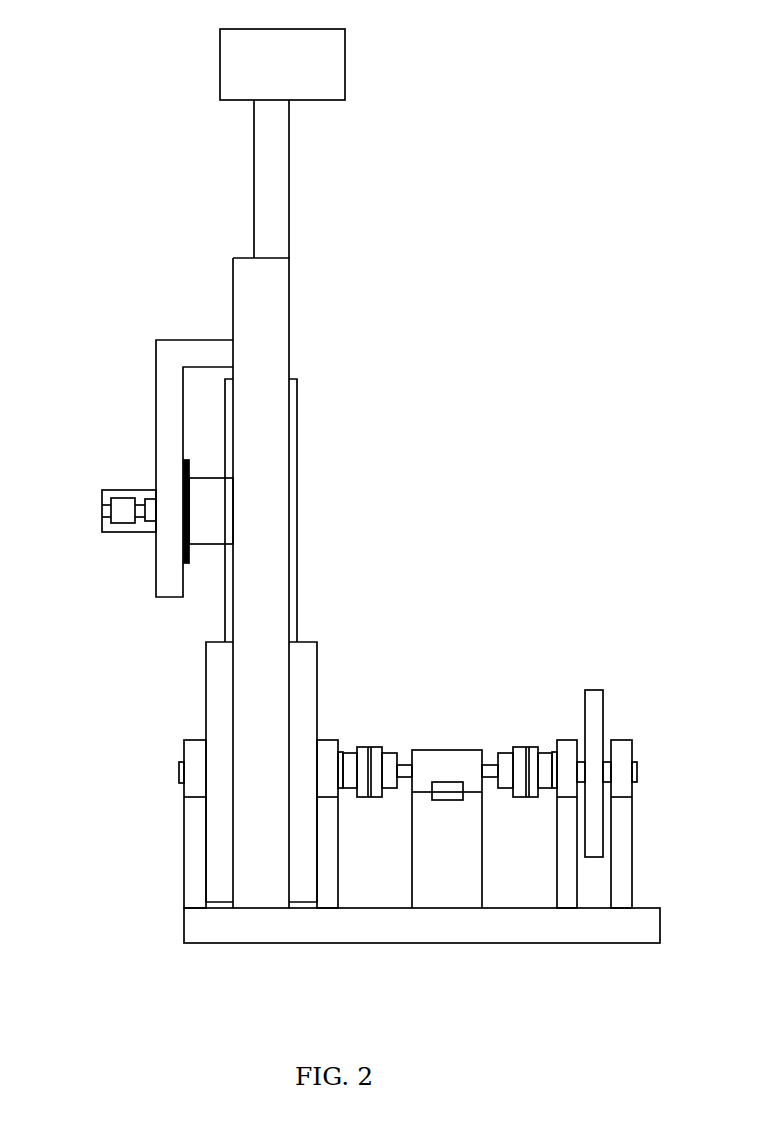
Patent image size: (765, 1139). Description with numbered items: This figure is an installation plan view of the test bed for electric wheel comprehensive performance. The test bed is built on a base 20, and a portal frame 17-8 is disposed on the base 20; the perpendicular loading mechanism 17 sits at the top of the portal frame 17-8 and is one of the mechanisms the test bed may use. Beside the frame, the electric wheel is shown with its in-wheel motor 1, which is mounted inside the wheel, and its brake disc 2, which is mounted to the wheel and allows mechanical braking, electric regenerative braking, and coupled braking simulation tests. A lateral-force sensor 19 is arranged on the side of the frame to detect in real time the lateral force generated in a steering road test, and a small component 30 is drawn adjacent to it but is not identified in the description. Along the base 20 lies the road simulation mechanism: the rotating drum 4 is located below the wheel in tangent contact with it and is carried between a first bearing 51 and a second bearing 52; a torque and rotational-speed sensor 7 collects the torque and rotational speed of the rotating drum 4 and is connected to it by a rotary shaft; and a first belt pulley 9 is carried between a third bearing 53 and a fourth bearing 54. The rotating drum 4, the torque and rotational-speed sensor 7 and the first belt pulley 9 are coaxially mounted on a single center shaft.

The perpendicular loading mechanism 17 is at (322, 63).
The portal frame 17-8 is at (353, 253).
The rotating drum 4 is at (262, 715).
The in-wheel motor 1 is at (207, 515).
The brake disc 2 is at (185, 462).
The lateral-force sensor 19 is at (122, 503).
The connector 30 is at (138, 522).
The first bearing 51 is at (193, 765).
The second bearing 52 is at (328, 768).
The torque and rotational-speed sensor 7 is at (443, 767).
The third bearing 53 is at (567, 767).
The first belt pulley 9 is at (592, 737).
The fourth bearing 54 is at (622, 767).
The base 20 is at (205, 925).